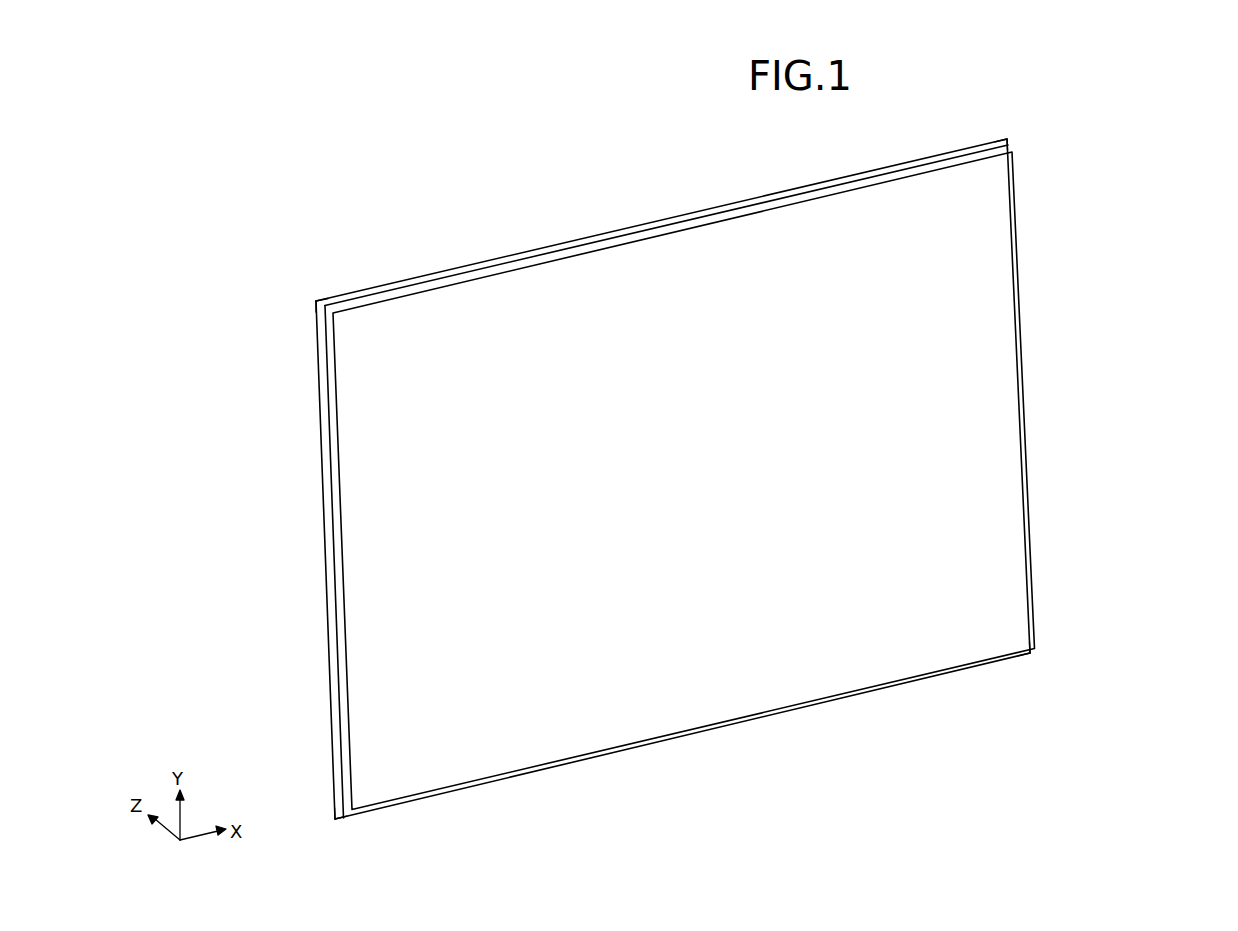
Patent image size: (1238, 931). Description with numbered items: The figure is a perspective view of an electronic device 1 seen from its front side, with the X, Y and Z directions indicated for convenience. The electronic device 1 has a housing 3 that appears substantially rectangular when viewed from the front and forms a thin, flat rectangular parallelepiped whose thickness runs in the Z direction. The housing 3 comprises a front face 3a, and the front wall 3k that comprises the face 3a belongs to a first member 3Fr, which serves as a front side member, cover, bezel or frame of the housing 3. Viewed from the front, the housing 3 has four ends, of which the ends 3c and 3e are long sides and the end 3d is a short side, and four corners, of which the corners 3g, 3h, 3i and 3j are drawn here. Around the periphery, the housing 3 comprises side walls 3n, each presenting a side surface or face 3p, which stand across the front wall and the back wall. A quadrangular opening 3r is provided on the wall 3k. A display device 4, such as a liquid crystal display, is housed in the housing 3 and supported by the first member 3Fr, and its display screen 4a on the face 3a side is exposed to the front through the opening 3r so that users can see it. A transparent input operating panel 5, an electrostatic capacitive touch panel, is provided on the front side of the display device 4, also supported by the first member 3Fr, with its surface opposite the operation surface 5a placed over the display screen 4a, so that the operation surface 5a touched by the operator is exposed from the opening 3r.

The electronic device 1 is at (1050, 112).
The housing 3 is at (694, 477).
The first member 3Fr is at (694, 477).
The wall 3n is at (694, 477).
The face 3p is at (633, 236).
The end 3c is at (835, 176).
The end 3d is at (1020, 328).
The end 3e is at (790, 713).
The face 3a is at (283, 560).
The wall 3k is at (343, 722).
The opening 3r is at (341, 505).
The corner 3j is at (318, 300).
The corner 3g is at (1009, 141).
The corner 3h is at (1032, 655).
The corner 3i is at (338, 821).
The display screen 4a is at (762, 481).
The display device 4 is at (762, 481).
The operation surface 5a is at (762, 481).
The input operating panel 5 is at (1007, 444).